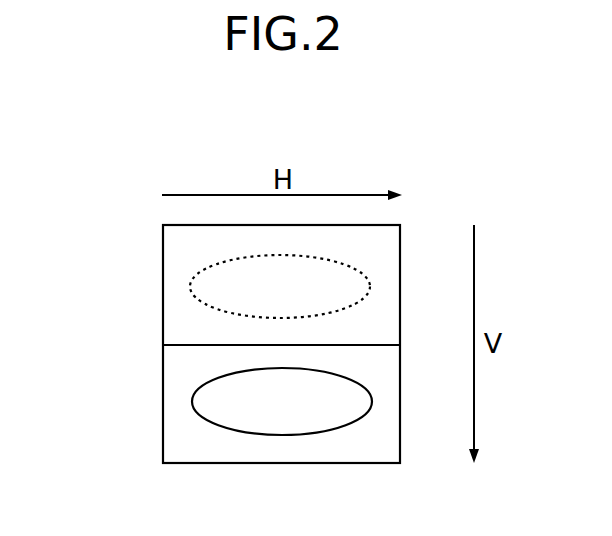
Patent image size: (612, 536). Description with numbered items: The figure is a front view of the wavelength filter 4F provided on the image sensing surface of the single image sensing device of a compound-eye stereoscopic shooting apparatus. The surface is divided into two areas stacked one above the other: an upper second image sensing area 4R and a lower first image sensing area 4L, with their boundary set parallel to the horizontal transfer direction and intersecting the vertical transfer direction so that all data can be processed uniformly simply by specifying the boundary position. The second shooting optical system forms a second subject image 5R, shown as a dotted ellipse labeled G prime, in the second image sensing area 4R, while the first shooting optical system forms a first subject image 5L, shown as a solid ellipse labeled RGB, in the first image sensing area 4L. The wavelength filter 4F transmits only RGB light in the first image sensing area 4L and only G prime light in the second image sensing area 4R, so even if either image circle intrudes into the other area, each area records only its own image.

The wavelength filter 4F is at (87, 225).
The second image sensing area 4R is at (152, 225).
The first image sensing area 4L is at (152, 345).
The second subject image 5R is at (368, 278).
The first subject image 5L is at (372, 395).